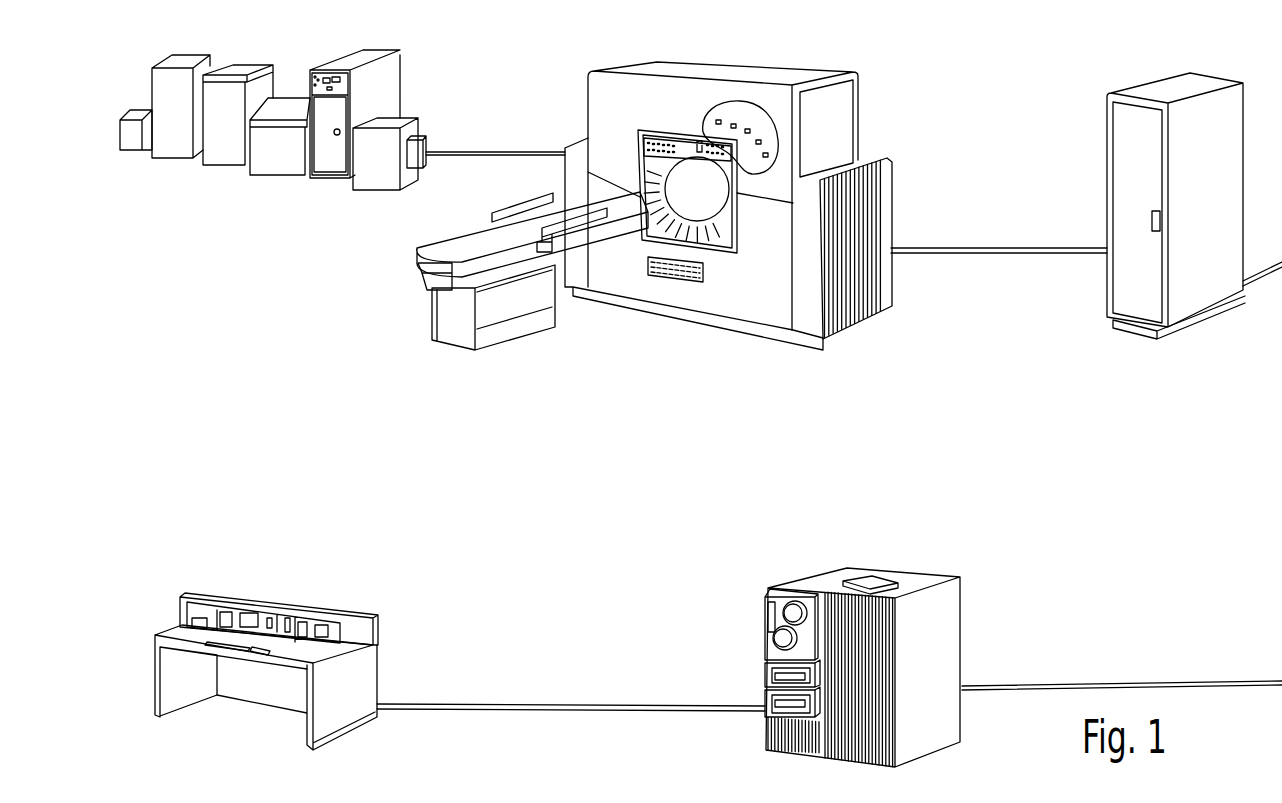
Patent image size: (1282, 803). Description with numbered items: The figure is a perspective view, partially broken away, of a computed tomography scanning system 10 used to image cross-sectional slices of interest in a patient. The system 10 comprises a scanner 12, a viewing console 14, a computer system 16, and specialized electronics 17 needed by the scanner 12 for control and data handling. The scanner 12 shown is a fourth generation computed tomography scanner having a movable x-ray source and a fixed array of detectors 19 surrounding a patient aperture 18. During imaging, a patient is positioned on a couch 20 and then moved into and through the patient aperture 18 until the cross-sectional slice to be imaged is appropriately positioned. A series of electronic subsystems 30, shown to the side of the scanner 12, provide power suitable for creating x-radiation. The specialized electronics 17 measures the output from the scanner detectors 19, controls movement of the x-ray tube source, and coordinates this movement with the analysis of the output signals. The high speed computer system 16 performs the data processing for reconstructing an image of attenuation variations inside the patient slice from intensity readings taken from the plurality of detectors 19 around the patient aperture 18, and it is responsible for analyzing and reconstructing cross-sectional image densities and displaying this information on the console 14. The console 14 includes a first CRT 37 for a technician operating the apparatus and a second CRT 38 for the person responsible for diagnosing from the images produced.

The computed tomography scanning system 10 is at (654, 214).
The scanner 12 is at (728, 203).
The viewing console 14 is at (291, 643).
The computer system 16 is at (923, 570).
The specialized electronics 17 is at (1228, 137).
The patient aperture 18 is at (702, 195).
The detectors 19 is at (758, 140).
The couch 20 is at (498, 318).
The electronic subsystems 30 is at (305, 196).
The first CRT 37 is at (320, 625).
The second CRT 38 is at (247, 613).